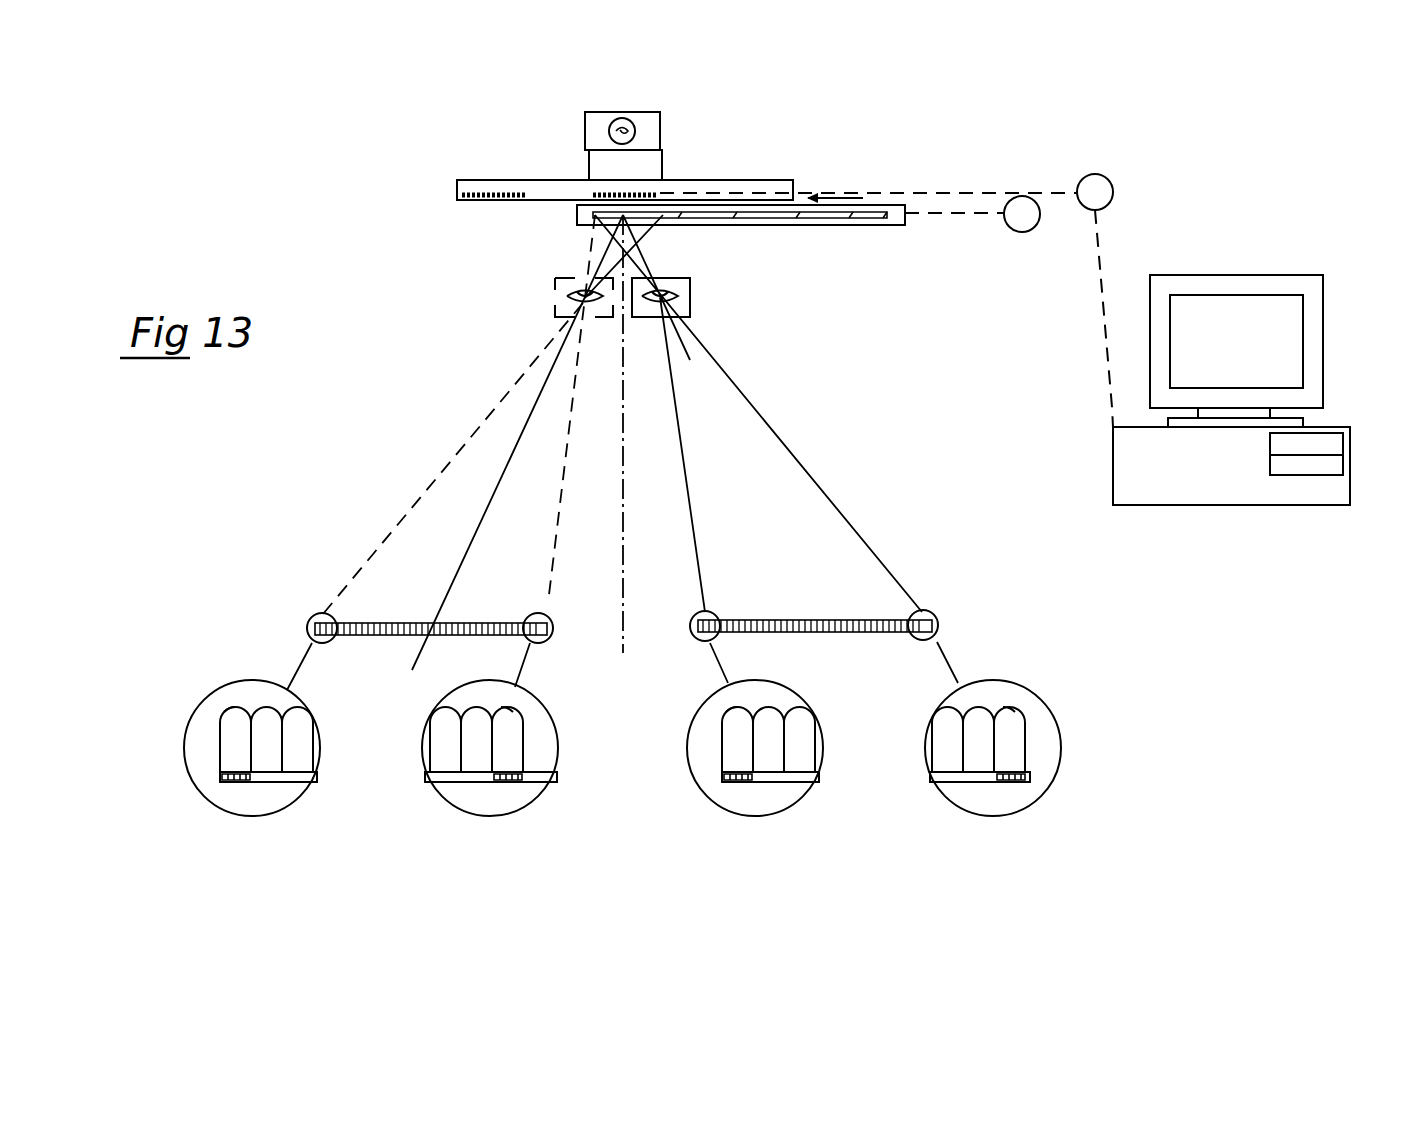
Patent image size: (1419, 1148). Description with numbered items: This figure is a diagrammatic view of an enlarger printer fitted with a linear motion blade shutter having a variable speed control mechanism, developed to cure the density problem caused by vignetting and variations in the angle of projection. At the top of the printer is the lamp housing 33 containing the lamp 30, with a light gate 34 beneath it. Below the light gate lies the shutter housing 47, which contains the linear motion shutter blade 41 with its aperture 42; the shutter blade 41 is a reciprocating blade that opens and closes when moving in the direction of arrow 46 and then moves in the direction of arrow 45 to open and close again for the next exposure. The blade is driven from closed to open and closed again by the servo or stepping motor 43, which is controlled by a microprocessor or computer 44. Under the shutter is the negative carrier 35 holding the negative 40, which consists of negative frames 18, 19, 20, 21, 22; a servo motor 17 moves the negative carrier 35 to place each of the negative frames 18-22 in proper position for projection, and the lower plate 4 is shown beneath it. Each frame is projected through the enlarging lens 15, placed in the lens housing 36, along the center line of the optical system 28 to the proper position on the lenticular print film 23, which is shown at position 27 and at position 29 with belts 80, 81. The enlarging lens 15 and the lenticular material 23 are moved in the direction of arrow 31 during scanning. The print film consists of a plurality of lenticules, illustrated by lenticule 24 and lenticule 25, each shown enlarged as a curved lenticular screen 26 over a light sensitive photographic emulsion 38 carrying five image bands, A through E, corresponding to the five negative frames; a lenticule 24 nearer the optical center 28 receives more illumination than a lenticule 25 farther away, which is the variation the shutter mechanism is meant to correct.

The conveyor plate 4 is at (503, 203).
The enlarging lens 15 is at (668, 300).
The servo motor 17 is at (1027, 233).
The negative frame 18 is at (623, 217).
The negative frame 19 is at (683, 217).
The negative frame 20 is at (743, 217).
The negative frame 21 is at (800, 217).
The negative frame 22 is at (857, 217).
The lenticular print film 23 is at (908, 622).
The lenticule 24 is at (512, 738).
The lenticule 25 is at (230, 735).
The curved lenticular screen 26 is at (227, 710).
The position 27 is at (831, 639).
The center line of the optical system 28 is at (626, 506).
The position 29 is at (415, 658).
The lamp 30 is at (625, 118).
The arrow 31 is at (616, 613).
The lamp housing 33 is at (657, 122).
The light gate 34 is at (654, 162).
The negative carrier 35 is at (878, 207).
The lens housing 36 is at (683, 291).
The light sensitive photographic emulsion 38 is at (302, 777).
The negative 40 is at (885, 213).
The linear motion shutter blade 41 is at (476, 167).
The aperture 42 is at (586, 164).
The servo or stepping motor 43 is at (1107, 176).
The microprocessor or computer 44 is at (1190, 507).
The arrow 45 is at (838, 198).
The arrow 46 is at (437, 198).
The shutter housing 47 is at (740, 179).
The belt 80 is at (800, 637).
The belt 81 is at (447, 634).